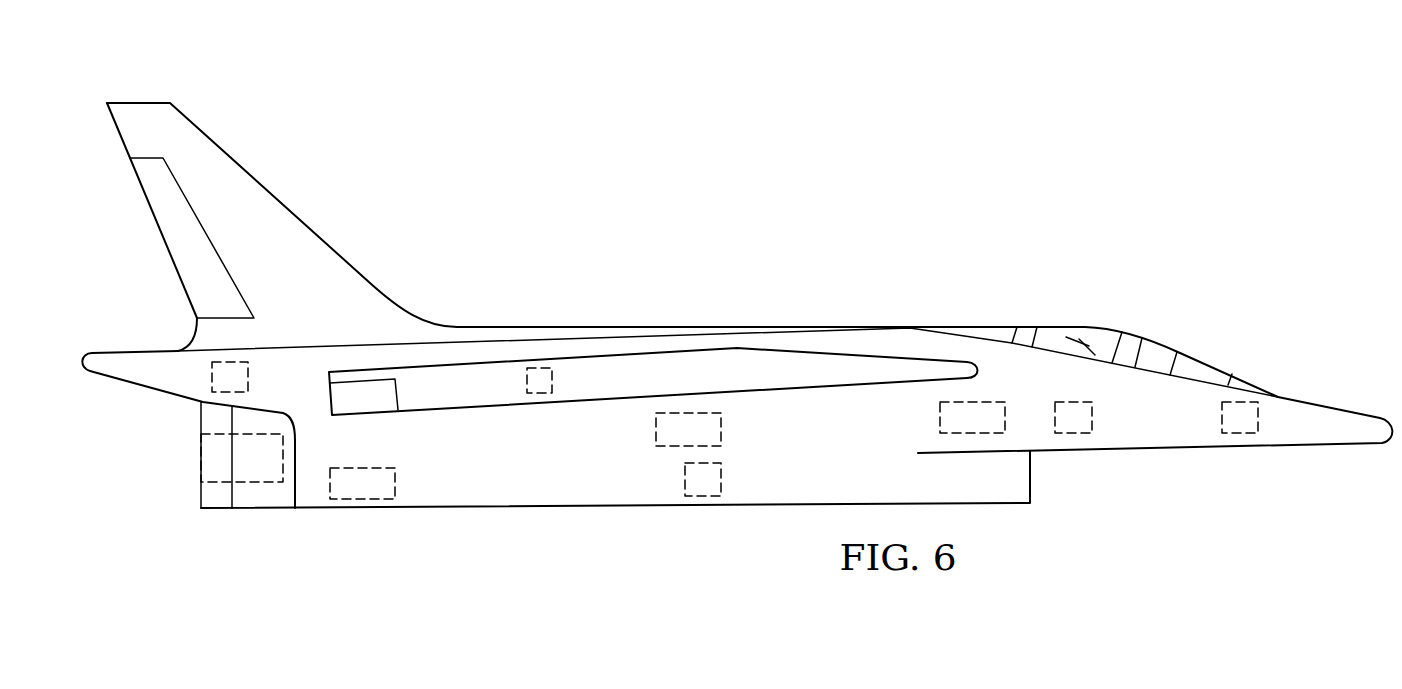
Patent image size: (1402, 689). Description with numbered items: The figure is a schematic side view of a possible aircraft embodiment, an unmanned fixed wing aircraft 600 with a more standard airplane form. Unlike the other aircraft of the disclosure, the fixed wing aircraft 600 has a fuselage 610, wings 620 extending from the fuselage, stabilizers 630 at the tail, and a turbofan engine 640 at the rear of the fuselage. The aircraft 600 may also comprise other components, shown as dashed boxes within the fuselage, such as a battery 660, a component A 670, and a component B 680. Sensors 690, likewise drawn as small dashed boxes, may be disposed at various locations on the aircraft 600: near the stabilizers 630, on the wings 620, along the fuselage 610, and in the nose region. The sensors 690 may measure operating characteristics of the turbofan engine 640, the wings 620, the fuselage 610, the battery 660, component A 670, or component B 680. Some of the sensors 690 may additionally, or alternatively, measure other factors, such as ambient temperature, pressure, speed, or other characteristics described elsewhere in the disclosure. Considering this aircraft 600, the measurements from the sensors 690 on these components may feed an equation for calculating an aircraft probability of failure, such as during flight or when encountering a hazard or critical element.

The fixed wing aircraft 600 is at (731, 307).
The fuselage 610 is at (1150, 446).
The wings 620 is at (733, 348).
The stabilizers 630 is at (138, 103).
The turbofan engine 640 is at (265, 482).
The battery 660 is at (362, 499).
The component A 670 is at (675, 446).
The component B 680 is at (972, 433).
The sensors 690 is at (1250, 475).